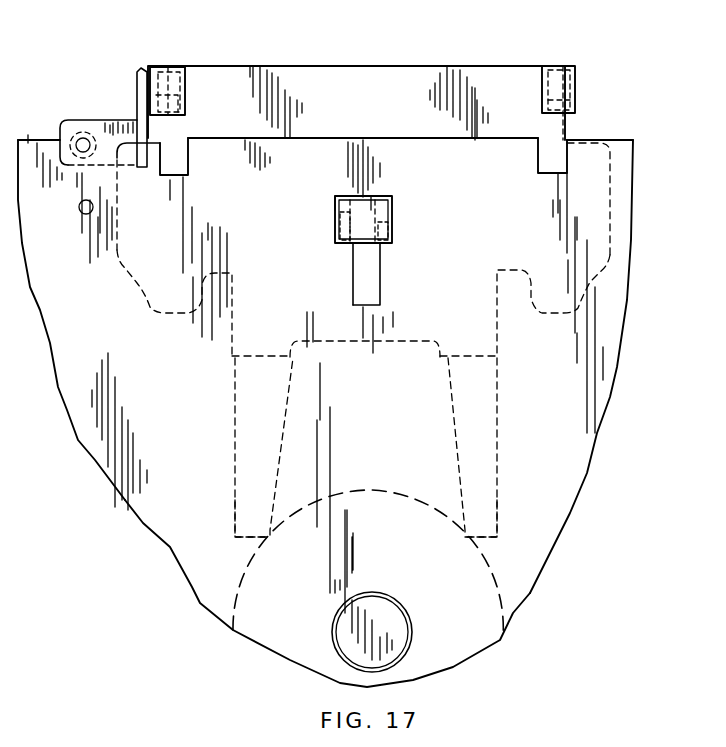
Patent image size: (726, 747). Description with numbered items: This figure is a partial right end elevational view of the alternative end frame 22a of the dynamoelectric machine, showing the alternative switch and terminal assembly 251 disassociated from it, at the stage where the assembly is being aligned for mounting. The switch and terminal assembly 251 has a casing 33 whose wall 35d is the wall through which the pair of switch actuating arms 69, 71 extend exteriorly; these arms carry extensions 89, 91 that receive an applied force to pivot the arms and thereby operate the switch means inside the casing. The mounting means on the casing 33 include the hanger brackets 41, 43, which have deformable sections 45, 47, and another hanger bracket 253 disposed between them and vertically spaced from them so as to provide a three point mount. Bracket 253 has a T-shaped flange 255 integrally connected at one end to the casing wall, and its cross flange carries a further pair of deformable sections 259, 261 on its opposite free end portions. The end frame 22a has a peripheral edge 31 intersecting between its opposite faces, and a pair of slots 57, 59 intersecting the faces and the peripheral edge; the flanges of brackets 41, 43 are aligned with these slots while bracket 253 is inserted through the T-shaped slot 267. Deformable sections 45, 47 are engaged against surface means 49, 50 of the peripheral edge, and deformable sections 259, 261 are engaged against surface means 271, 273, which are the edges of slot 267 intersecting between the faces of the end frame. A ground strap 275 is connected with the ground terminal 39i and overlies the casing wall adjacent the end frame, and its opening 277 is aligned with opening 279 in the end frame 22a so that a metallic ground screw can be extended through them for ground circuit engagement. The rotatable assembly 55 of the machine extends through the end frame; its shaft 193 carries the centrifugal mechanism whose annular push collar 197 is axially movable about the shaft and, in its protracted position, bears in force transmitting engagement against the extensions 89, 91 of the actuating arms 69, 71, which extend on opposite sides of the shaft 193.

The end frame 22a is at (699, 381).
The rotatable assembly 55 is at (523, 630).
The switch and terminal assembly 251 is at (660, 54).
The hanger bracket 43 is at (168, 67).
The deformable section 47 is at (182, 100).
The hanger bracket 41 is at (558, 66).
The deformable section 45 is at (548, 100).
The ground terminal 39i is at (137, 88).
The ground strap 275 is at (112, 120).
The opening 277 is at (78, 132).
The opening 279 is at (79, 212).
The surface means 50 is at (150, 140).
The slot 57 is at (178, 172).
The slot 59 is at (545, 170).
The surface means 49 is at (567, 140).
The peripheral edge 31 is at (618, 140).
The casing 33 is at (115, 262).
The wall 35d is at (333, 345).
The actuating arm 71 is at (235, 385).
The actuating arm 69 is at (497, 395).
The extension 91 is at (235, 517).
The extension 89 is at (497, 520).
The push collar 197 is at (207, 607).
The shaft 193 is at (347, 640).
The hanger bracket 253 is at (340, 179).
The flange 255 is at (332, 212).
The deformable section 259 is at (340, 232).
The deformable section 261 is at (392, 229).
The slot 267 is at (380, 196).
The surface means 271 is at (345, 250).
The surface means 273 is at (385, 245).